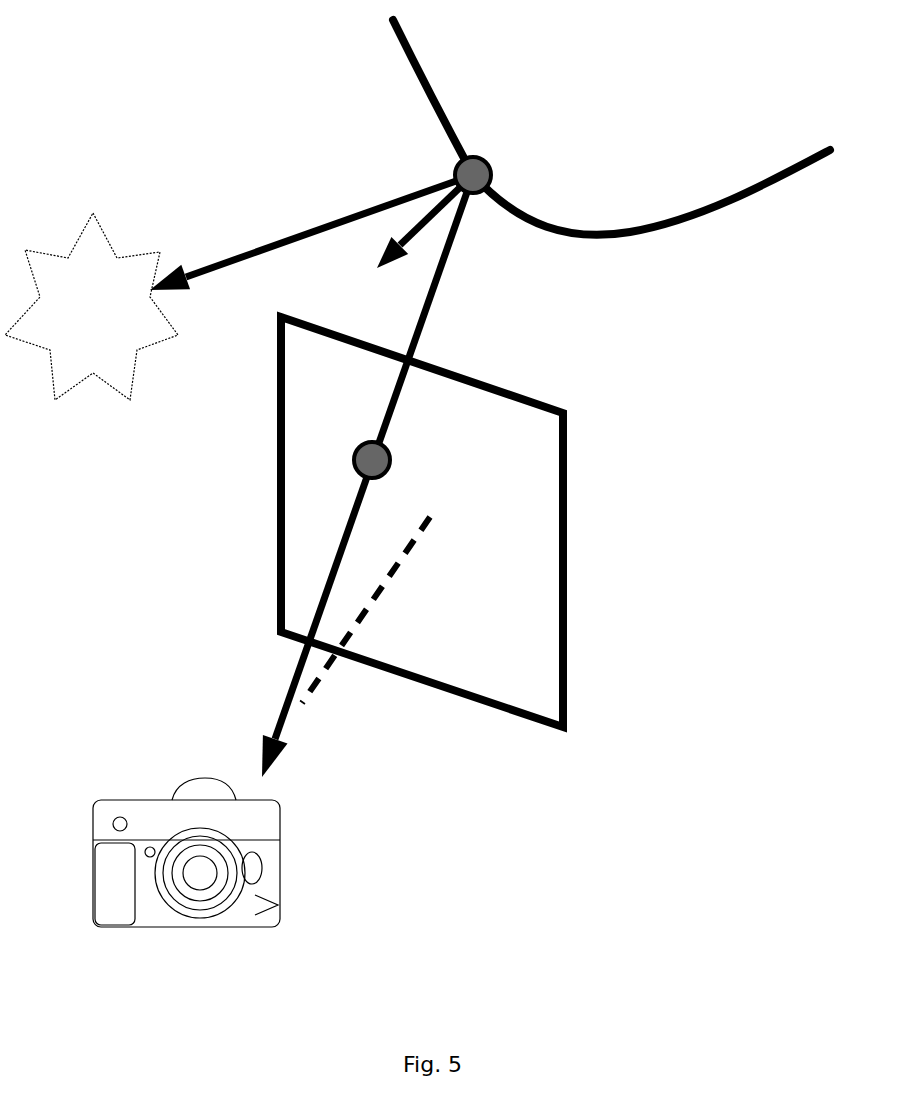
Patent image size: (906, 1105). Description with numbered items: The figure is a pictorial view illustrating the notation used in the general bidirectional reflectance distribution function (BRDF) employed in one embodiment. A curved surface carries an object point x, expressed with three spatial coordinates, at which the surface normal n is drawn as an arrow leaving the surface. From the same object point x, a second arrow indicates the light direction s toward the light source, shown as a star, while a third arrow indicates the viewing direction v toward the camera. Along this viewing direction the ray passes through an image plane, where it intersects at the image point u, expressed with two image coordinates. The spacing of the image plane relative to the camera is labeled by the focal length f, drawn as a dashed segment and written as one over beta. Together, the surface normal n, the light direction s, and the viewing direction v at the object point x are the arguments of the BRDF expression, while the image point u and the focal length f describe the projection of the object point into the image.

The object point x is at (493, 145).
The surface normal n is at (402, 239).
The light direction s is at (239, 287).
The image point u is at (352, 432).
The viewing direction v is at (342, 476).
The focal length f is at (378, 632).